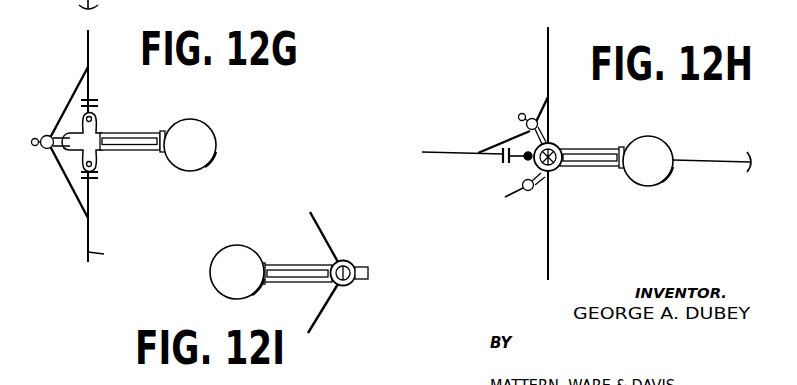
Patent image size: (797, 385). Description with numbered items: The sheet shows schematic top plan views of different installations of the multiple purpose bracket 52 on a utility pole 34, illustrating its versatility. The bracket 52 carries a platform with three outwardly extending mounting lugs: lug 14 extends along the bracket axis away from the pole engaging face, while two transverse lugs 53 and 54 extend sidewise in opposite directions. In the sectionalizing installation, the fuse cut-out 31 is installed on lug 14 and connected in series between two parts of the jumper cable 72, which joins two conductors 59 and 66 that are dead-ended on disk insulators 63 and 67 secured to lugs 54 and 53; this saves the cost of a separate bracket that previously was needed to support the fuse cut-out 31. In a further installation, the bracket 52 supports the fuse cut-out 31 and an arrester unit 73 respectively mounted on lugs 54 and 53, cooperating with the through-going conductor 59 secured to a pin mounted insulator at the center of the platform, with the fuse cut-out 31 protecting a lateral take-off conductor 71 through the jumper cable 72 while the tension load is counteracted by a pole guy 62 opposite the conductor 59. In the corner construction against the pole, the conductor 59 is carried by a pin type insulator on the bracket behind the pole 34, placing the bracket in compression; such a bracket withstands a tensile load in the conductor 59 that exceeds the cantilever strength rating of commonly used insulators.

In FIG. 12G, the lug 14 is at (74, 152).
In FIG. 12G, the fuse cut-out 31 is at (42, 133).
In FIG. 12H, the fuse cut-out 31 is at (530, 118).
In FIG. 12G, the pole 34 is at (203, 138).
In FIG. 12I, the pole 34 is at (230, 262).
In FIG. 12H, the pole 34 is at (655, 152).
In FIG. 12G, the bracket 52 is at (156, 151).
In FIG. 12I, the bracket 52 is at (306, 264).
In FIG. 12H, the bracket 52 is at (577, 148).
In FIG. 12G, the transverse lug 53 is at (97, 156).
In FIG. 12G, the transverse lug 54 is at (95, 124).
In FIG. 12G, the conductor 59 is at (88, 46).
In FIG. 12I, the conductor 59 is at (328, 232).
In FIG. 12H, the conductor 59 is at (548, 224).
In FIG. 12H, the pole guy 62 is at (692, 163).
In FIG. 12G, the disk insulator 63 is at (96, 103).
In FIG. 12G, the conductor 66 is at (107, 258).
In FIG. 12G, the disk insulator 67 is at (98, 181).
In FIG. 12H, the lateral take-off conductor 71 is at (441, 152).
In FIG. 12G, the jumper cable 72 is at (72, 96).
In FIG. 12H, the jumper cable 72 is at (541, 100).
In FIG. 12H, the arrester unit 73 is at (511, 190).